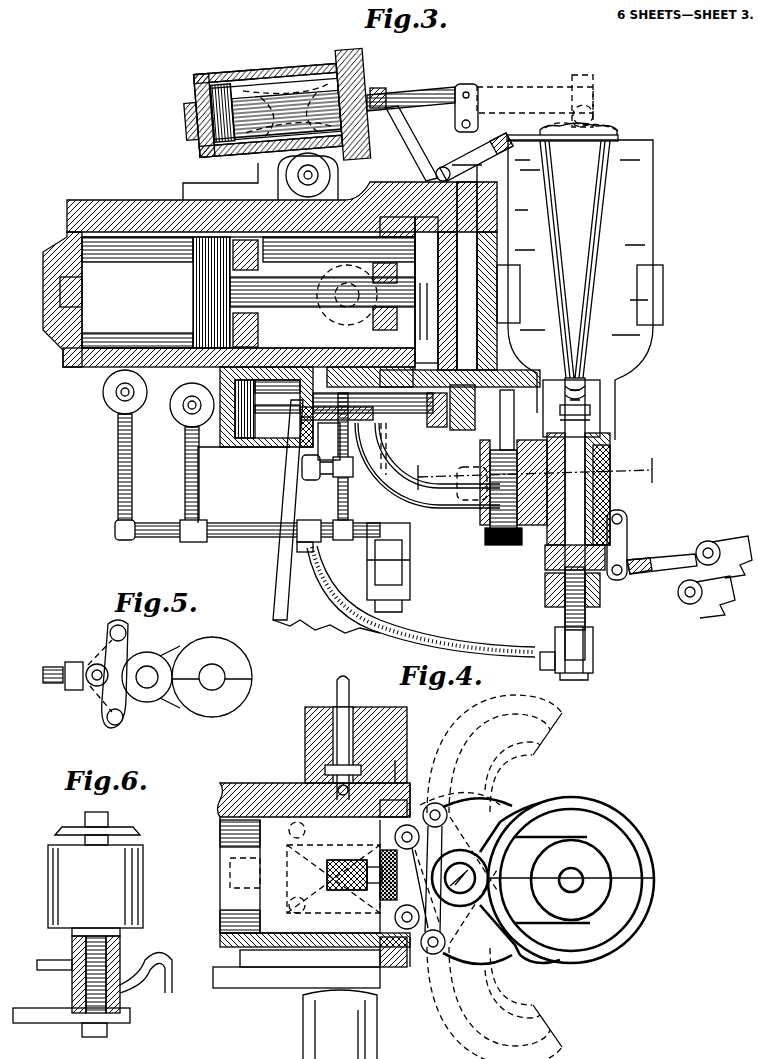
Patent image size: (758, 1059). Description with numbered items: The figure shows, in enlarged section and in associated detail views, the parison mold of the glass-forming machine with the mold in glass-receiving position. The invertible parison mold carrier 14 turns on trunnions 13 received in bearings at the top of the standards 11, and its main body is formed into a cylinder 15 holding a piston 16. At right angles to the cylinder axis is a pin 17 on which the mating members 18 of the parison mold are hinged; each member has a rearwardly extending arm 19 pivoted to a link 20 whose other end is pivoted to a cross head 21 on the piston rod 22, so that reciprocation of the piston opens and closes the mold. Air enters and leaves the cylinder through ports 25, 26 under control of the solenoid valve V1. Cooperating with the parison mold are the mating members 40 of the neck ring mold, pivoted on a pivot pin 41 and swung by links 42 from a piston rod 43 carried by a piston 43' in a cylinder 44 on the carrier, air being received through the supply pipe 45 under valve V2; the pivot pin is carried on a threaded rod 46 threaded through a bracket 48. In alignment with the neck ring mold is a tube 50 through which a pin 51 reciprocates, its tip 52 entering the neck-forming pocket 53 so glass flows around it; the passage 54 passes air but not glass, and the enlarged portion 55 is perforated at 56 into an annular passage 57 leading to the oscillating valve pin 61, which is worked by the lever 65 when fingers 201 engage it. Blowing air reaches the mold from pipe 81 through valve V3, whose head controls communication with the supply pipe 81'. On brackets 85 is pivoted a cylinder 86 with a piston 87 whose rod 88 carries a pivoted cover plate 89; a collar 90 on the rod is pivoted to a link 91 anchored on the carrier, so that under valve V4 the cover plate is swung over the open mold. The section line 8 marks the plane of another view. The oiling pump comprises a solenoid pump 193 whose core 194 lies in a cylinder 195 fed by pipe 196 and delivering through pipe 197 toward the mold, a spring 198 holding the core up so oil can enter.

In FIG. 3, the section line 8 is at (534, 475).
In FIG. 3, the standard 11 is at (262, 572).
In FIG. 4, the trunnion 13 is at (305, 747).
In FIG. 3, the parison mold carrier 14 is at (128, 210).
In FIG. 3, the cylinder 15 is at (63, 360).
In FIG. 4, the cylinder 15 is at (240, 838).
In FIG. 3, the piston 16 is at (200, 322).
In FIG. 3, the pin 17 is at (475, 186).
In FIG. 4, the pin 17 is at (496, 883).
In FIG. 3, the mating member of the parison mold 18 is at (653, 220).
In FIG. 4, the mating member of the parison mold 18 is at (640, 890).
In FIG. 3, the rearwardly extending arm 19 is at (436, 270).
In FIG. 4, the rearwardly extending arm 19 is at (488, 803).
In FIG. 3, the link 20 is at (430, 342).
In FIG. 4, the link 20 is at (375, 890).
In FIG. 3, the cross head 21 is at (388, 200).
In FIG. 4, the cross head 21 is at (396, 783).
In FIG. 3, the piston rod 22 is at (300, 310).
In FIG. 4, the piston rod 22 is at (325, 872).
In FIG. 3, the port 25 is at (103, 386).
In FIG. 3, the port 26 is at (168, 423).
In FIG. 3, the mating member of the neck ring mold 40 is at (600, 425).
In FIG. 5, the mating member of the neck ring mold 40 is at (245, 678).
In FIG. 3, the pivot pin 41 is at (510, 382).
In FIG. 5, the pivot pin 41 is at (152, 690).
In FIG. 3, the link 42 is at (452, 430).
In FIG. 5, the link 42 is at (104, 660).
In FIG. 3, the piston rod 43 is at (427, 465).
In FIG. 5, the piston rod 43 is at (61, 659).
In FIG. 3, the piston 43' is at (344, 447).
In FIG. 3, the cylinder 44 is at (243, 455).
In FIG. 3, the supply pipe 45 is at (190, 472).
In FIG. 3, the threaded rod 46 is at (503, 546).
In FIG. 3, the bracket 48 is at (448, 555).
In FIG. 3, the tube 50 is at (628, 525).
In FIG. 3, the pin 51 is at (610, 440).
In FIG. 3, the tip 52 is at (600, 412).
In FIG. 3, the neck-forming pocket 53 is at (600, 392).
In FIG. 3, the passage 54 is at (600, 402).
In FIG. 3, the enlarged portion 55 is at (610, 450).
In FIG. 3, the perforation 56 is at (612, 462).
In FIG. 3, the annular passage 57 is at (612, 478).
In FIG. 3, the valve pin 61 is at (545, 546).
In FIG. 3, the lever 65 is at (670, 558).
In FIG. 3, the pipe 81 is at (450, 573).
In FIG. 3, the supply pipe 81' is at (325, 559).
In FIG. 3, the bracket 85 is at (230, 175).
In FIG. 3, the cylinder 86 is at (300, 72).
In FIG. 3, the piston 87 is at (248, 78).
In FIG. 3, the rod 88 is at (434, 94).
In FIG. 3, the cover plate 89 is at (506, 138).
In FIG. 3, the collar 90 is at (388, 90).
In FIG. 3, the link 91 is at (425, 160).
In FIG. 6, the solenoid pump 193 is at (145, 900).
In FIG. 6, the core 194 is at (125, 942).
In FIG. 6, the cylinder 195 is at (122, 1010).
In FIG. 6, the pipe 196 is at (72, 947).
In FIG. 6, the pipe 197 is at (180, 997).
In FIG. 6, the spring 198 is at (75, 990).
In FIG. 3, the finger 201 is at (713, 543).
In FIG. 3, the solenoid-operated valve V1 is at (118, 408).
In FIG. 3, the solenoid-operated valve V2 is at (183, 450).
In FIG. 3, the solenoid valve V3 is at (425, 595).
In FIG. 3, the solenoid-operated valve V4 is at (283, 176).